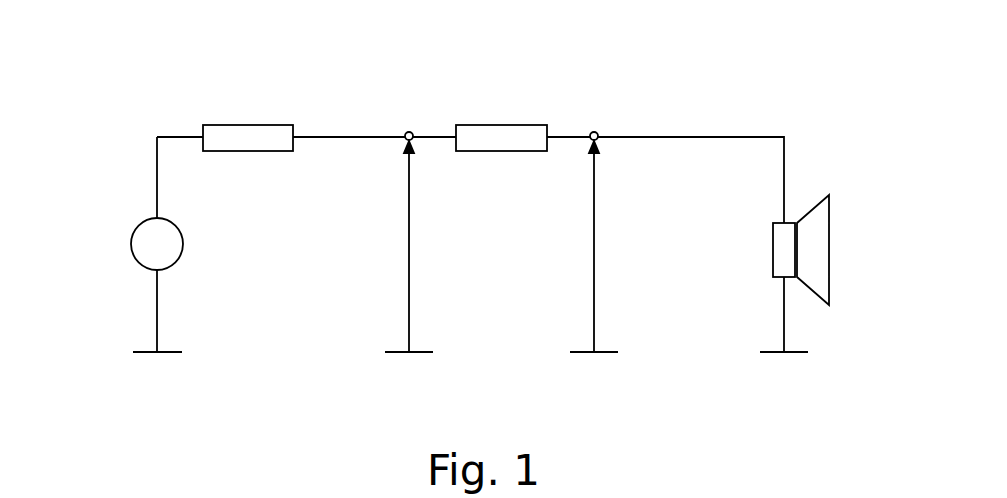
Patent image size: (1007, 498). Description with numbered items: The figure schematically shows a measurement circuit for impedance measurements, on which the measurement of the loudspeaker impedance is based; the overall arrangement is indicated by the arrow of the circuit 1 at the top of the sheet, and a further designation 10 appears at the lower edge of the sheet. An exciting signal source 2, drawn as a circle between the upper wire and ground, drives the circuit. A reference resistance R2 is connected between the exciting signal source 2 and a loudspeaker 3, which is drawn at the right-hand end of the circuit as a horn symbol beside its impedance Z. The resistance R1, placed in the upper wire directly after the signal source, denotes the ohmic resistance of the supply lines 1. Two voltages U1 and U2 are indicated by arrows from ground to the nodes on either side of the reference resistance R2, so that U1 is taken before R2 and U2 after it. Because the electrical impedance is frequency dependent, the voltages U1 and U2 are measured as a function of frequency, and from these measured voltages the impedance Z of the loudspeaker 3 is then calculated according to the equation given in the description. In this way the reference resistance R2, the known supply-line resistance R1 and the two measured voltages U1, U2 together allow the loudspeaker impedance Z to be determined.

The supply lines 1 is at (648, 0).
The exciting signal source 2 is at (131, 244).
The loudspeaker 3 is at (806, 216).
The audio system 10 is at (796, 493).
The ohmic resistance of the supply lines R1 is at (248, 122).
The reference resistance R2 is at (501, 122).
The voltage U1 is at (420, 242).
The voltage U2 is at (607, 242).
The impedance Z is at (774, 287).